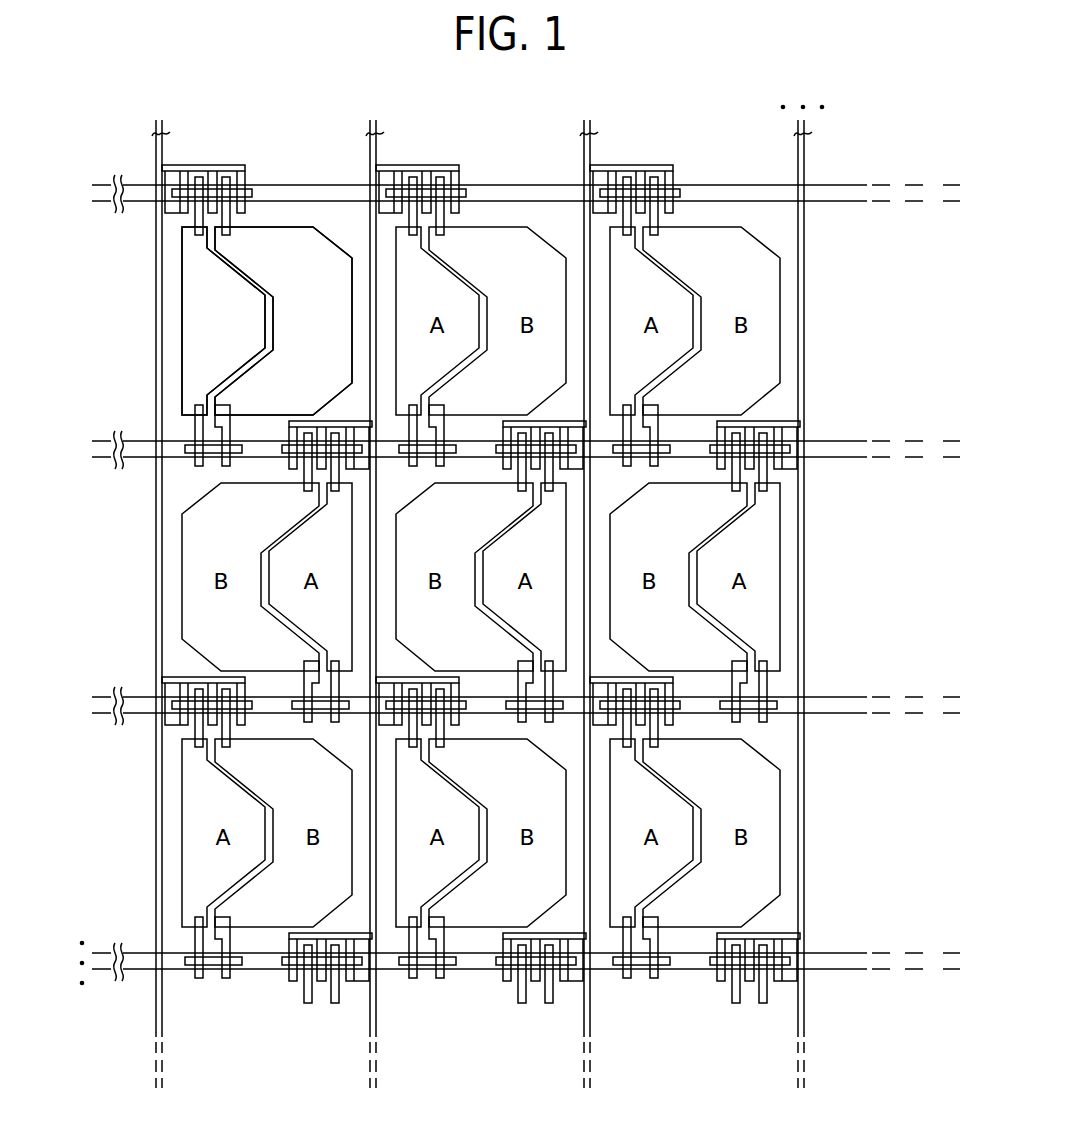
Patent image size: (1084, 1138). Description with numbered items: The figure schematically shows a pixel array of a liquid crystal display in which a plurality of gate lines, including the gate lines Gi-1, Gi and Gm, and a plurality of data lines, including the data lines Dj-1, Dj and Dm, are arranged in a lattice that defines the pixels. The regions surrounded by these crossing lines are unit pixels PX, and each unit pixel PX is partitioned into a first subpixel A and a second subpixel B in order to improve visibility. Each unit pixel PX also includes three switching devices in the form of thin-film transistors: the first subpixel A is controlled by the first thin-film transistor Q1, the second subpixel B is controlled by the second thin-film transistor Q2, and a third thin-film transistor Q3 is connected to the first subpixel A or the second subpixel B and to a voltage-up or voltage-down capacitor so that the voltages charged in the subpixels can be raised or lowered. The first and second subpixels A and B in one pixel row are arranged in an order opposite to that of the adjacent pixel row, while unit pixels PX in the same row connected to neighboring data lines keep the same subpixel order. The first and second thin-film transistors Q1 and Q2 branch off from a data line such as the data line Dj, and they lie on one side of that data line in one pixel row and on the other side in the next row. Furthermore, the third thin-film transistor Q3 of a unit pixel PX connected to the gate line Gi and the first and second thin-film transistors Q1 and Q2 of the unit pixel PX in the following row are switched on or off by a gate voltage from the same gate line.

The first thin-film transistor Q1 is at (200, 159).
The second thin-film transistor Q2 is at (228, 159).
The third thin-film transistor Q3 is at (183, 428).
The unit pixel PX is at (298, 255).
The first subpixel A is at (223, 321).
The second subpixel B is at (283, 321).
The (j-1)th data line Dj-1 is at (159, 592).
The jth data line Dj is at (374, 592).
The mth data line Dm is at (831, 592).
The (i-1)th gate line Gi-1 is at (508, 194).
The ith gate line Gi is at (514, 450).
The mth gate line Gm is at (514, 998).